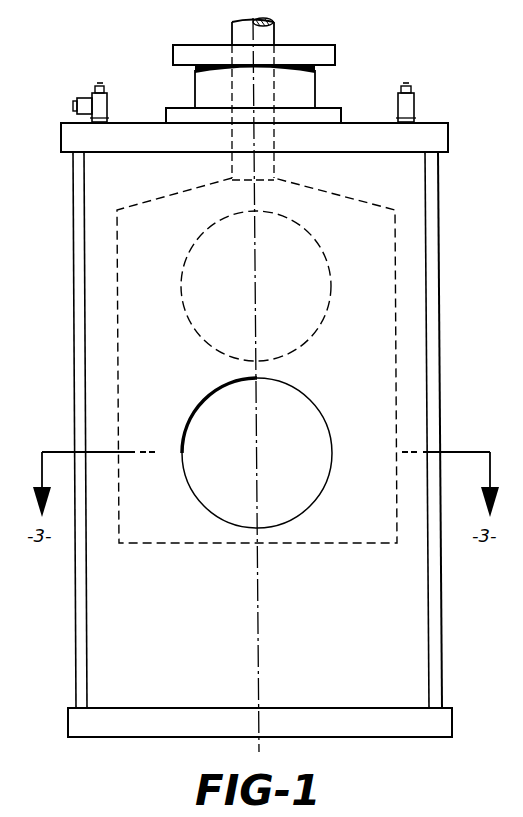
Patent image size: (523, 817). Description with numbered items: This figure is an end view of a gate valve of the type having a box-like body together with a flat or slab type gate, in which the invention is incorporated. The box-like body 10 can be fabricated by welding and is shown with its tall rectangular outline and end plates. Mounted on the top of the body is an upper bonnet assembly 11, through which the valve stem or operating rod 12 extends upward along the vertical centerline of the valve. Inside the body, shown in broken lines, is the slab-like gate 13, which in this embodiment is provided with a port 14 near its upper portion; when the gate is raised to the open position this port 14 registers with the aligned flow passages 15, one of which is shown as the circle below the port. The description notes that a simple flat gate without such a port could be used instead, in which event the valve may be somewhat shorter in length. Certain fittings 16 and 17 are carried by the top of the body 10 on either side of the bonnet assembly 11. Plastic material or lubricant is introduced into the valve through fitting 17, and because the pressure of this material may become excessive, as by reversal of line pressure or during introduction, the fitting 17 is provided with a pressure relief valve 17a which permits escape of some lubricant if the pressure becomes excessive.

The box-like body 10 is at (421, 253).
The upper bonnet assembly 11 is at (308, 92).
The valve stem 12 is at (233, 33).
The slab-like gate 13 is at (397, 368).
The port 14 is at (311, 250).
The flow passages 15 is at (296, 396).
The fitting 16 is at (414, 97).
The fitting 17 is at (107, 92).
The pressure relief valve 17a is at (74, 104).